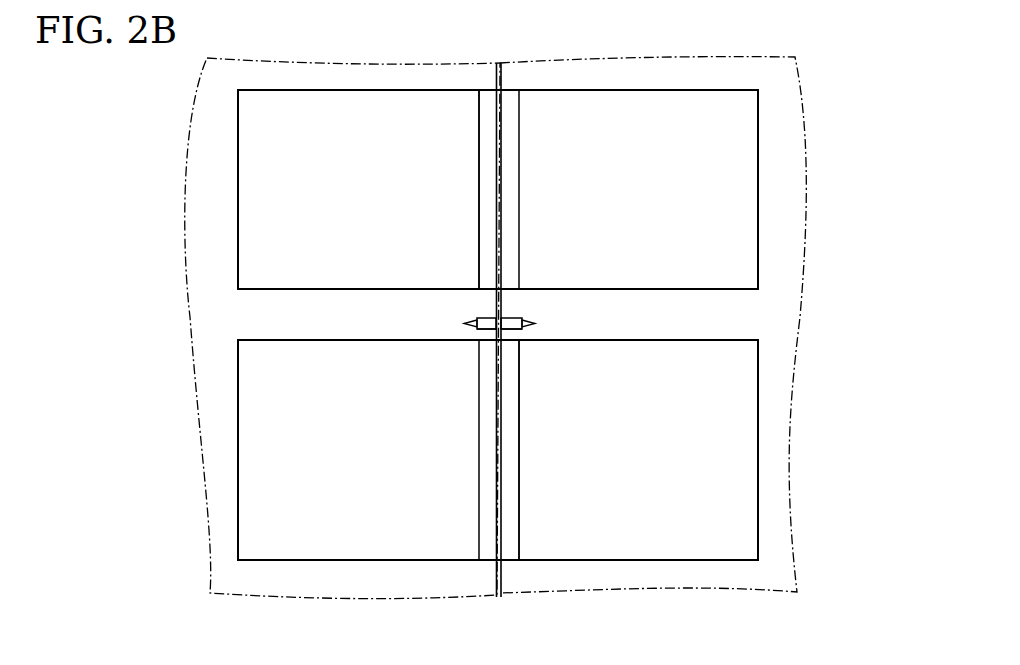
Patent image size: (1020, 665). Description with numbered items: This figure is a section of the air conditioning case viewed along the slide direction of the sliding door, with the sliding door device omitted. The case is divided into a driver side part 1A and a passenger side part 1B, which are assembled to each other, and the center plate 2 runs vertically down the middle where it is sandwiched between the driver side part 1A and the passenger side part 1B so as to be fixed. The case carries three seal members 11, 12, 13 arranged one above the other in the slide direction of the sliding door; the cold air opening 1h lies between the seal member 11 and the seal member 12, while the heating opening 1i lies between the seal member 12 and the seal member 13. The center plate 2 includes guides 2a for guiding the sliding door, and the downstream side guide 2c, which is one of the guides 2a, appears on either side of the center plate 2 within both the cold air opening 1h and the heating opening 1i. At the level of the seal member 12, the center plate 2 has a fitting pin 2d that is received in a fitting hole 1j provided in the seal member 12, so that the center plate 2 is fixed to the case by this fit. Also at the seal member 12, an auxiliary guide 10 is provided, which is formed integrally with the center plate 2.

The driver side part 1A is at (250, 318).
The passenger side part 1B is at (760, 315).
The cold air opening 1h is at (292, 185).
The heating opening 1i is at (292, 458).
The fitting hole 1j is at (463, 324).
The center plate 2 is at (500, 597).
The guides 2a is at (499, 325).
The downstream side guide 2c is at (483, 136).
The fitting pin 2d is at (473, 331).
The auxiliary guide 10 is at (490, 323).
The seal member 11 is at (697, 73).
The seal member 12 is at (700, 318).
The seal member 13 is at (637, 572).